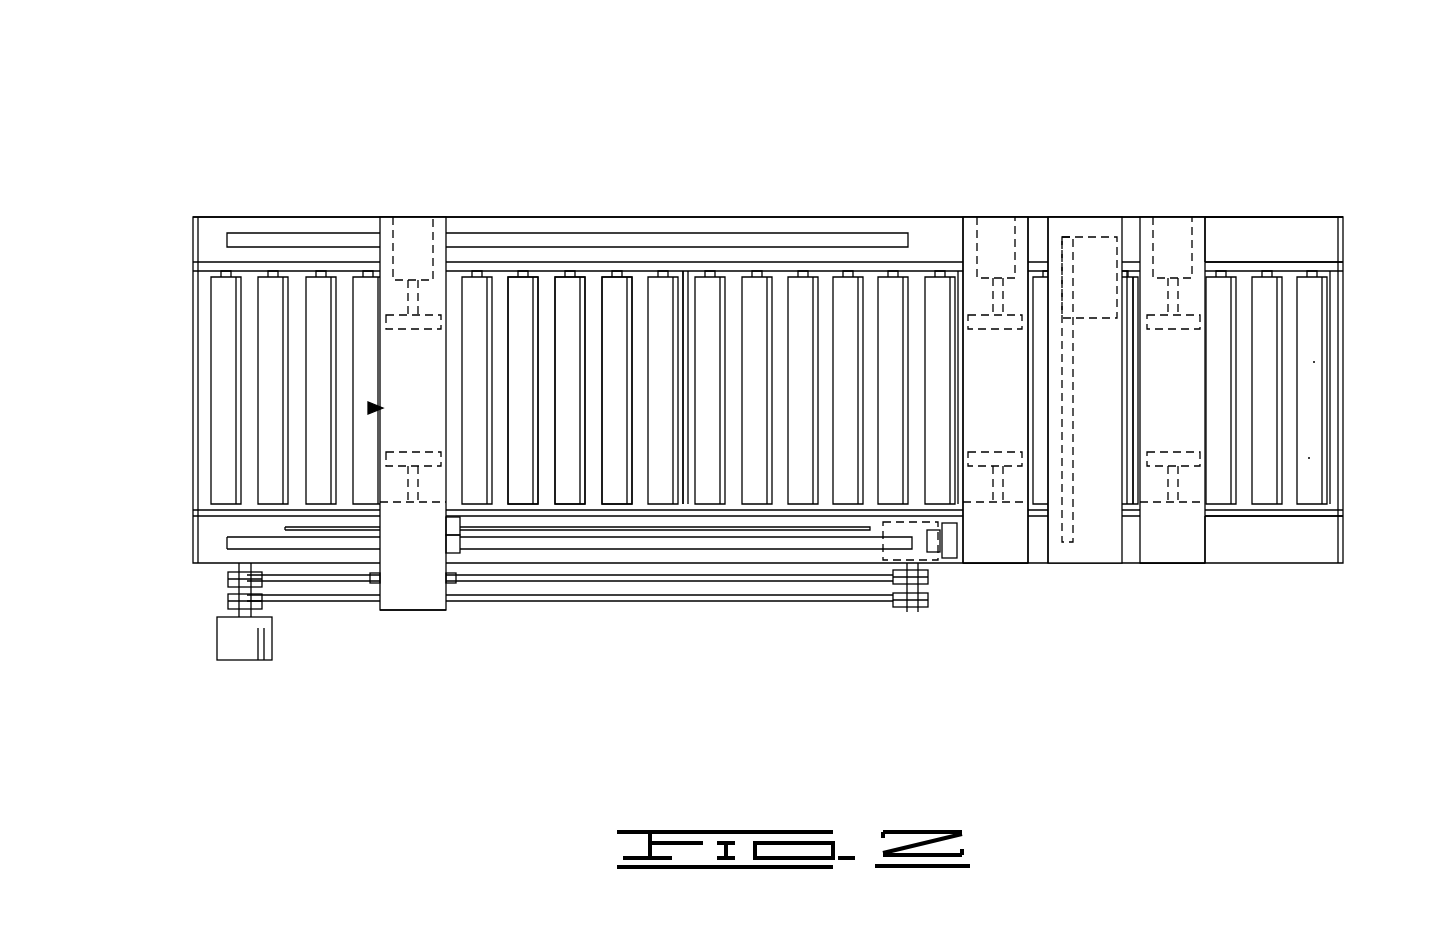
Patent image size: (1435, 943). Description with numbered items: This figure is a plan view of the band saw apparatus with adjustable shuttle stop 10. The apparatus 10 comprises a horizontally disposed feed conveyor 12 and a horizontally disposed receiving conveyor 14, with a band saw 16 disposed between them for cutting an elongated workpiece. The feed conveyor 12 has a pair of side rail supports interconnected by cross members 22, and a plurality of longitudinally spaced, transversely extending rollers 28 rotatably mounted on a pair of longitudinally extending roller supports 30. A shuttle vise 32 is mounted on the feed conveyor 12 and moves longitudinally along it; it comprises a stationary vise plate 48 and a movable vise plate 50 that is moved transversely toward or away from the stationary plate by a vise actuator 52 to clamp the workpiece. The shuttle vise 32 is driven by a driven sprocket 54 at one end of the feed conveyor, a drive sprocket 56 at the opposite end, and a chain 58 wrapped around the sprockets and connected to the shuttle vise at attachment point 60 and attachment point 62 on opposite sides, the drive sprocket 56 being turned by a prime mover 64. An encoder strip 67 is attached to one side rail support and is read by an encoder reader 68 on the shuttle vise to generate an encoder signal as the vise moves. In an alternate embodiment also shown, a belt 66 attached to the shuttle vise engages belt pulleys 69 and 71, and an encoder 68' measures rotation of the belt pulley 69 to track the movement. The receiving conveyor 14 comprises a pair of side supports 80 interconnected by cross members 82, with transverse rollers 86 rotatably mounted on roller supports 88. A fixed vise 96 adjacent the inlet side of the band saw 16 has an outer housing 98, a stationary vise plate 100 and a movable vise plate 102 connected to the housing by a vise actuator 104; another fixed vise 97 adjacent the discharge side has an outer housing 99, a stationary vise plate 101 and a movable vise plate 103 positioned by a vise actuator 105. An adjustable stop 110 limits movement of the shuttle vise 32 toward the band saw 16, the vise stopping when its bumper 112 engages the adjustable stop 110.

The band saw apparatus with adjustable shuttle stop 10 is at (882, 145).
The feed conveyor 12 is at (773, 205).
The receiving conveyor 14 is at (1283, 205).
The band saw 16 is at (1094, 205).
The cross members 22 is at (684, 270).
The rollers 28 is at (612, 295).
The roller supports 30 is at (270, 268).
The shuttle vise 32 is at (375, 408).
The stationary vise plate 48 is at (385, 460).
The movable vise plate 50 is at (383, 332).
The vise actuator 52 is at (410, 237).
The driven sprocket 54 is at (228, 578).
The drive sprocket 56 is at (882, 600).
The chain 58 is at (700, 580).
The attachment point 60 is at (375, 583).
The attachment point 62 is at (453, 583).
The prime mover 64 is at (858, 570).
The belt 66 is at (305, 605).
The encoder strip 67 is at (785, 530).
The encoder reader 68 is at (413, 632).
The encoder 68' is at (195, 662).
The belt pulley 69 is at (228, 598).
The belt pulley 71 is at (910, 620).
The side supports 80 is at (1317, 230).
The cross members 82 is at (1335, 412).
The rollers 86 is at (1310, 340).
The roller supports 88 is at (1318, 265).
The fixed vise 96 is at (1005, 205).
The fixed vise 97 is at (1164, 205).
The outer housing 98 is at (1010, 555).
The outer housing 99 is at (1175, 545).
The stationary vise plate 100 is at (985, 545).
The stationary vise plate 101 is at (1308, 461).
The movable vise plate 102 is at (991, 390).
The movable vise plate 103 is at (1313, 365).
The vise actuator 104 is at (985, 245).
The vise actuator 105 is at (1214, 242).
The adjustable stop 110 is at (946, 575).
The bumper 112 is at (465, 548).